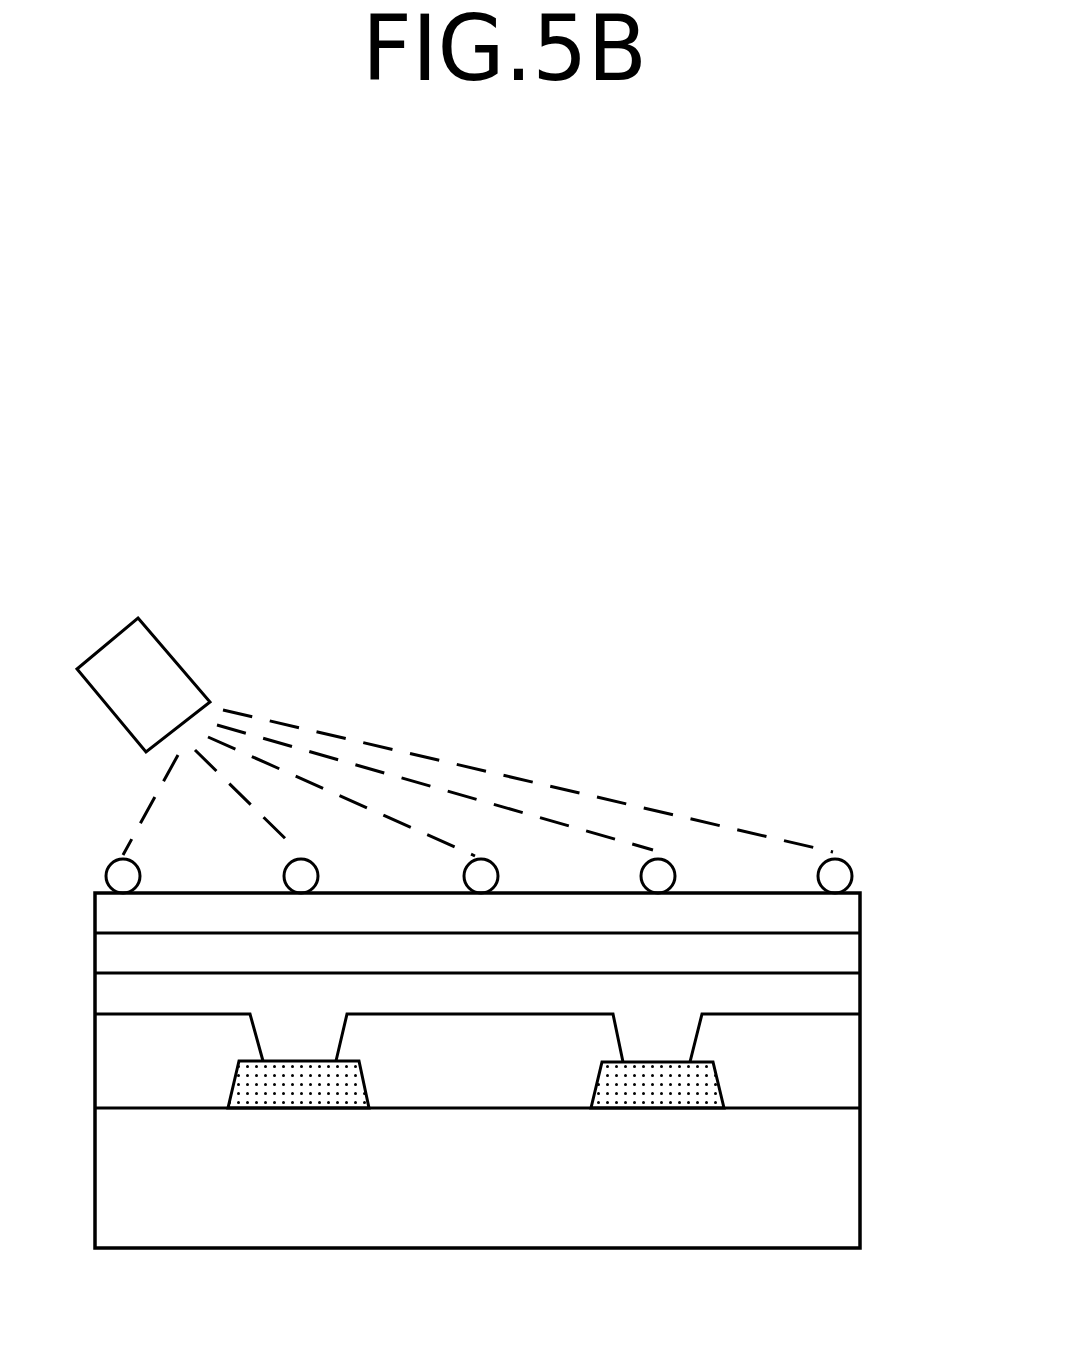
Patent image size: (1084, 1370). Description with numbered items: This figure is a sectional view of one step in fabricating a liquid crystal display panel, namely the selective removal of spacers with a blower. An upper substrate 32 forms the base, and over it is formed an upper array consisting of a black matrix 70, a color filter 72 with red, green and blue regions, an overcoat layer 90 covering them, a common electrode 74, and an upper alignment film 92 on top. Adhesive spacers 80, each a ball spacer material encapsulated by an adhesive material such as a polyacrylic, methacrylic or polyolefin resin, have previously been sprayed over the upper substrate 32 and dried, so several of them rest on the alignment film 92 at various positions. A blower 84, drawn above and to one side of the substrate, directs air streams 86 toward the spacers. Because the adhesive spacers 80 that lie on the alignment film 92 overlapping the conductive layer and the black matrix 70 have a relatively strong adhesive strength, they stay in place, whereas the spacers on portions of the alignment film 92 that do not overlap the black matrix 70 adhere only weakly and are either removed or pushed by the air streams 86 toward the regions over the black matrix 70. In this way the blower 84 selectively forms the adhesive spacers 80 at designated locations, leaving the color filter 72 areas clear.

The upper substrate 32 is at (860, 1190).
The black matrix 70 is at (652, 1098).
The color filter 72 is at (860, 1085).
The common electrode 74 is at (860, 940).
The adhesive spacers 80 is at (845, 862).
The blower 84 is at (167, 660).
The air streams 86 is at (568, 790).
The overcoat layer 90 is at (860, 992).
The upper alignment film 92 is at (860, 900).